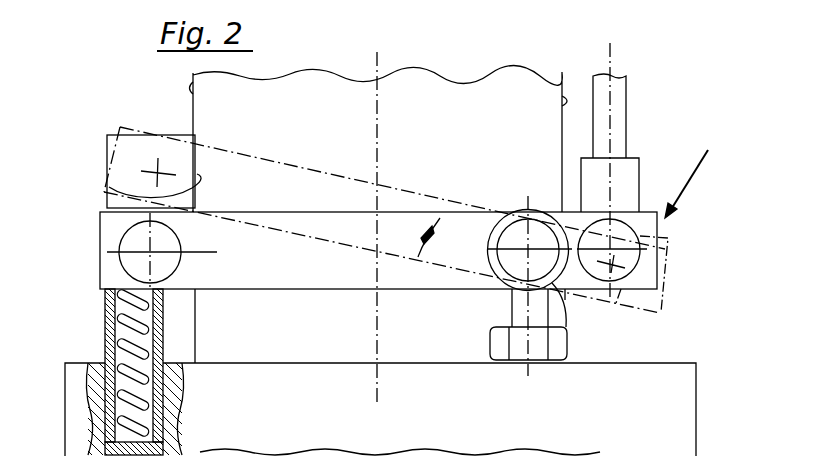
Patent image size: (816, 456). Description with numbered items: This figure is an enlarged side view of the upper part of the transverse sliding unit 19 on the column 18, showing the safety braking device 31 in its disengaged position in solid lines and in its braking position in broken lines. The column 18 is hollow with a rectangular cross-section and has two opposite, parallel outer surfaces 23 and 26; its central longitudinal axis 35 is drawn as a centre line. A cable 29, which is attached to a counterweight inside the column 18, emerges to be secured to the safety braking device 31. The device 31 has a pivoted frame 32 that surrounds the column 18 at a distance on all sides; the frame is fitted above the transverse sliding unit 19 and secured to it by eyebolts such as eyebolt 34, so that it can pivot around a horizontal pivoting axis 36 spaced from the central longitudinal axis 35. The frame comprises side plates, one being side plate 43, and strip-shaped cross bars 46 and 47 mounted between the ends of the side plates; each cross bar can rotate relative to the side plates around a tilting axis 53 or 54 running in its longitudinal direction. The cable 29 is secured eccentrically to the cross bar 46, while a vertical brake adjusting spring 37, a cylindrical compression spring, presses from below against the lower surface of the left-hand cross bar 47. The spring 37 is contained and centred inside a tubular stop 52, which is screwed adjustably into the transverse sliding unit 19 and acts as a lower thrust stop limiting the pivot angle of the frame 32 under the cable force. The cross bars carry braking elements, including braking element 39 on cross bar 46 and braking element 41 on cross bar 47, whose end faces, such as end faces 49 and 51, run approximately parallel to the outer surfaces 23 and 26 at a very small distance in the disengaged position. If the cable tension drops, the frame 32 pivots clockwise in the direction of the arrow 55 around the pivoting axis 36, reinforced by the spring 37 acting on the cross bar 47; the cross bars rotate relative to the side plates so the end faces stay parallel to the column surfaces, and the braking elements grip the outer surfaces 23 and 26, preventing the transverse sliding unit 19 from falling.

The column 18 is at (440, 114).
The transverse sliding unit 19 is at (681, 412).
The outer surface 23 is at (562, 101).
The outer surface 26 is at (193, 88).
The cable 29 is at (618, 110).
The safety braking device 31 is at (703, 169).
The pivoted frame 32 is at (110, 261).
The eyebolt 34 is at (513, 285).
The central longitudinal axis 35 is at (377, 91).
The pivoting axis 36 is at (528, 250).
The brake adjusting spring 37 is at (105, 318).
The braking element 39 is at (574, 302).
The braking element 41 is at (185, 133).
The side plate 43 is at (285, 278).
The cross bar 46 is at (668, 253).
The cross bar 47 is at (108, 147).
The end face 49 is at (566, 344).
The end face 51 is at (110, 193).
The stop 52 is at (163, 376).
The tilting axis 53 is at (607, 250).
The tilting axis 54 is at (150, 252).
The arrow 55 is at (423, 247).